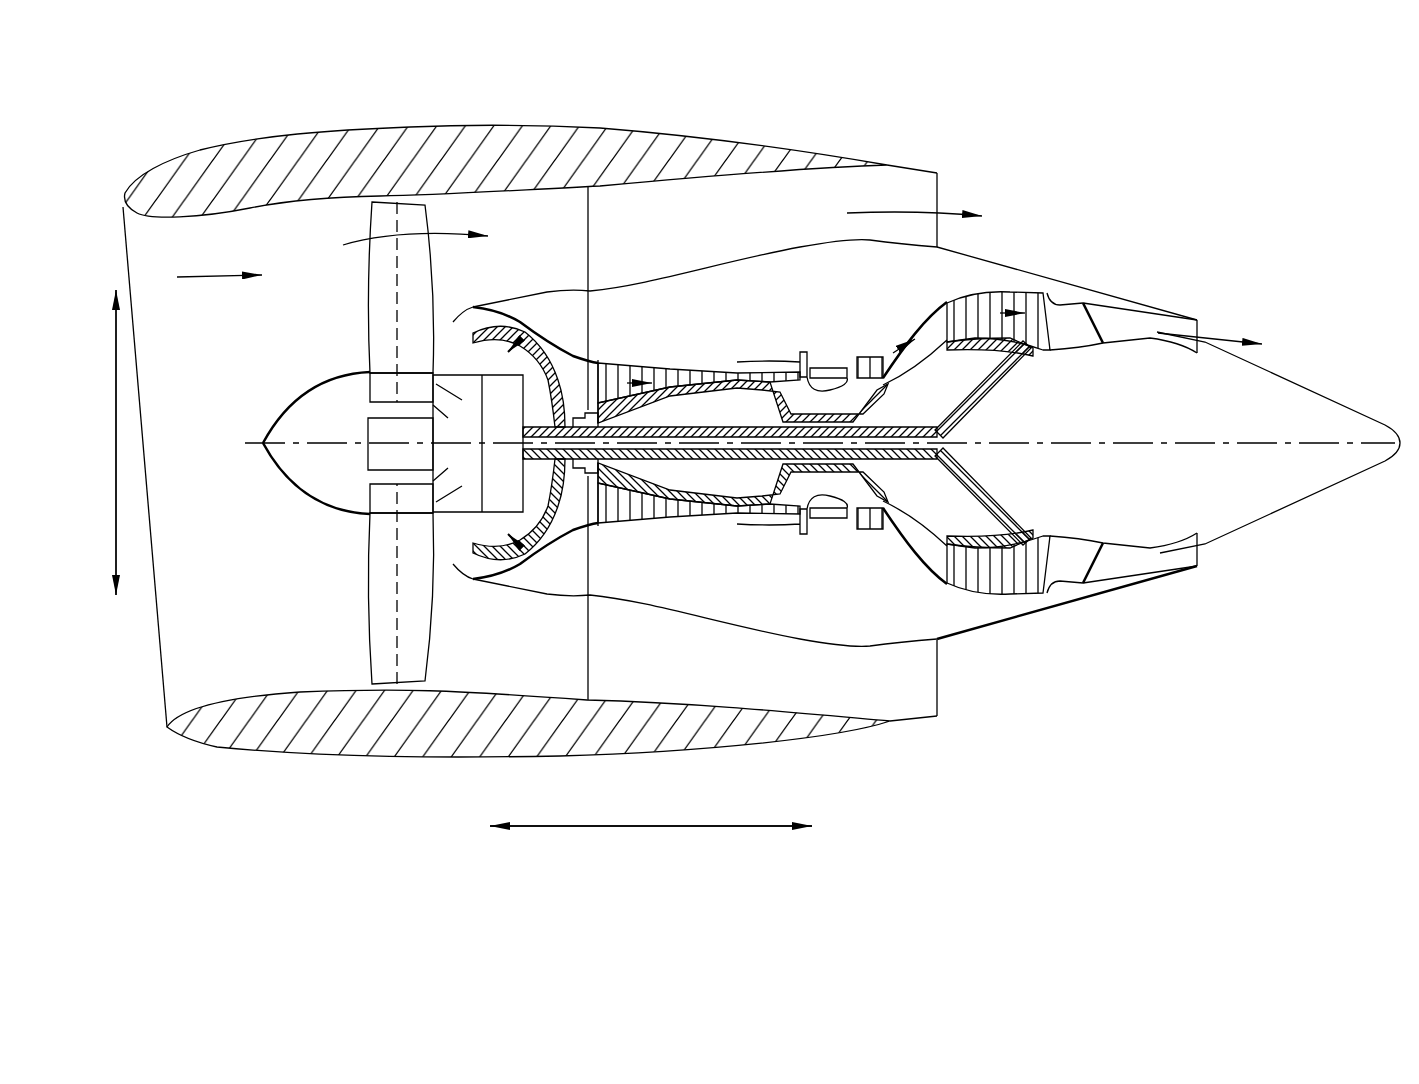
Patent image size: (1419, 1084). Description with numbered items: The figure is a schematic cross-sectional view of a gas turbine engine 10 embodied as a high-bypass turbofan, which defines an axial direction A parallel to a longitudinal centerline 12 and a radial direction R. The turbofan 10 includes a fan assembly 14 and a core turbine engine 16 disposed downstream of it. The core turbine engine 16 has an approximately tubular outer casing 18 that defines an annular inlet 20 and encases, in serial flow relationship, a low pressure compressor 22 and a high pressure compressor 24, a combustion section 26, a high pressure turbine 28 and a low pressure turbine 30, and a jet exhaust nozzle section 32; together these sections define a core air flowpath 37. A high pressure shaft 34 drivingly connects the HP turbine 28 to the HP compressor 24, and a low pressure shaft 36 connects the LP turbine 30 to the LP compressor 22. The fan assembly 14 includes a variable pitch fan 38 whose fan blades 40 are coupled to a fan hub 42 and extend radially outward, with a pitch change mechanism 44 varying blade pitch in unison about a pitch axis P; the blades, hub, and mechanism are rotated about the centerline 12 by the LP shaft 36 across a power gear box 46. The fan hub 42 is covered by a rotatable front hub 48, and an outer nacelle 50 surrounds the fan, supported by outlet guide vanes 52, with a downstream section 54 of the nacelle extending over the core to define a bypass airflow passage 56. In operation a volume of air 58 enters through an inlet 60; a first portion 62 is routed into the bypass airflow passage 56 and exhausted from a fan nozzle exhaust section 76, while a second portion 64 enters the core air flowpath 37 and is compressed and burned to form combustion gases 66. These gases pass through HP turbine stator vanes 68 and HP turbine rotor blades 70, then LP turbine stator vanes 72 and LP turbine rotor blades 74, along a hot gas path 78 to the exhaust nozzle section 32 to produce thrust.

The gas turbine engine 10 is at (1107, 160).
The longitudinal centerline 12 is at (1133, 440).
The fan assembly 14 is at (276, 243).
The core turbine engine 16 is at (777, 300).
The outer casing 18 is at (773, 633).
The annular inlet 20 is at (468, 570).
The low pressure compressor 22 is at (536, 534).
The high pressure compressor 24 is at (627, 522).
The combustion section 26 is at (820, 529).
The high pressure turbine 28 is at (891, 523).
The low pressure turbine 30 is at (1038, 599).
The jet exhaust nozzle section 32 is at (1108, 582).
The high pressure shaft 34 is at (827, 412).
The low pressure shaft 36 is at (927, 430).
The core air flowpath 37 is at (568, 542).
The variable pitch fan 38 is at (320, 502).
The fan blades 40 is at (367, 617).
The fan hub 42 is at (373, 390).
The pitch change mechanism 44 is at (433, 418).
The power gear box 46 is at (500, 393).
The rotatable front hub 48 is at (280, 463).
The outer nacelle 50 is at (420, 760).
The outlet guide vanes 52 is at (590, 235).
The downstream section of nacelle 54 is at (827, 153).
The bypass airflow passage 56 is at (746, 227).
The volume of air 58 is at (227, 280).
The inlet 60 is at (188, 688).
The first portion of air 62 is at (387, 237).
The second portion of air 64 is at (453, 320).
The combustion gases 66 is at (877, 373).
The HP turbine stator vanes 68 is at (840, 527).
The HP turbine rotor blades 70 is at (860, 500).
The LP turbine stator vanes 72 is at (957, 587).
The LP turbine rotor blades 74 is at (960, 592).
The fan nozzle exhaust section 76 is at (923, 192).
The hot gas path 78 is at (924, 325).
The radial direction R is at (117, 443).
The axial direction A is at (652, 826).
The pitch axis P is at (403, 218).